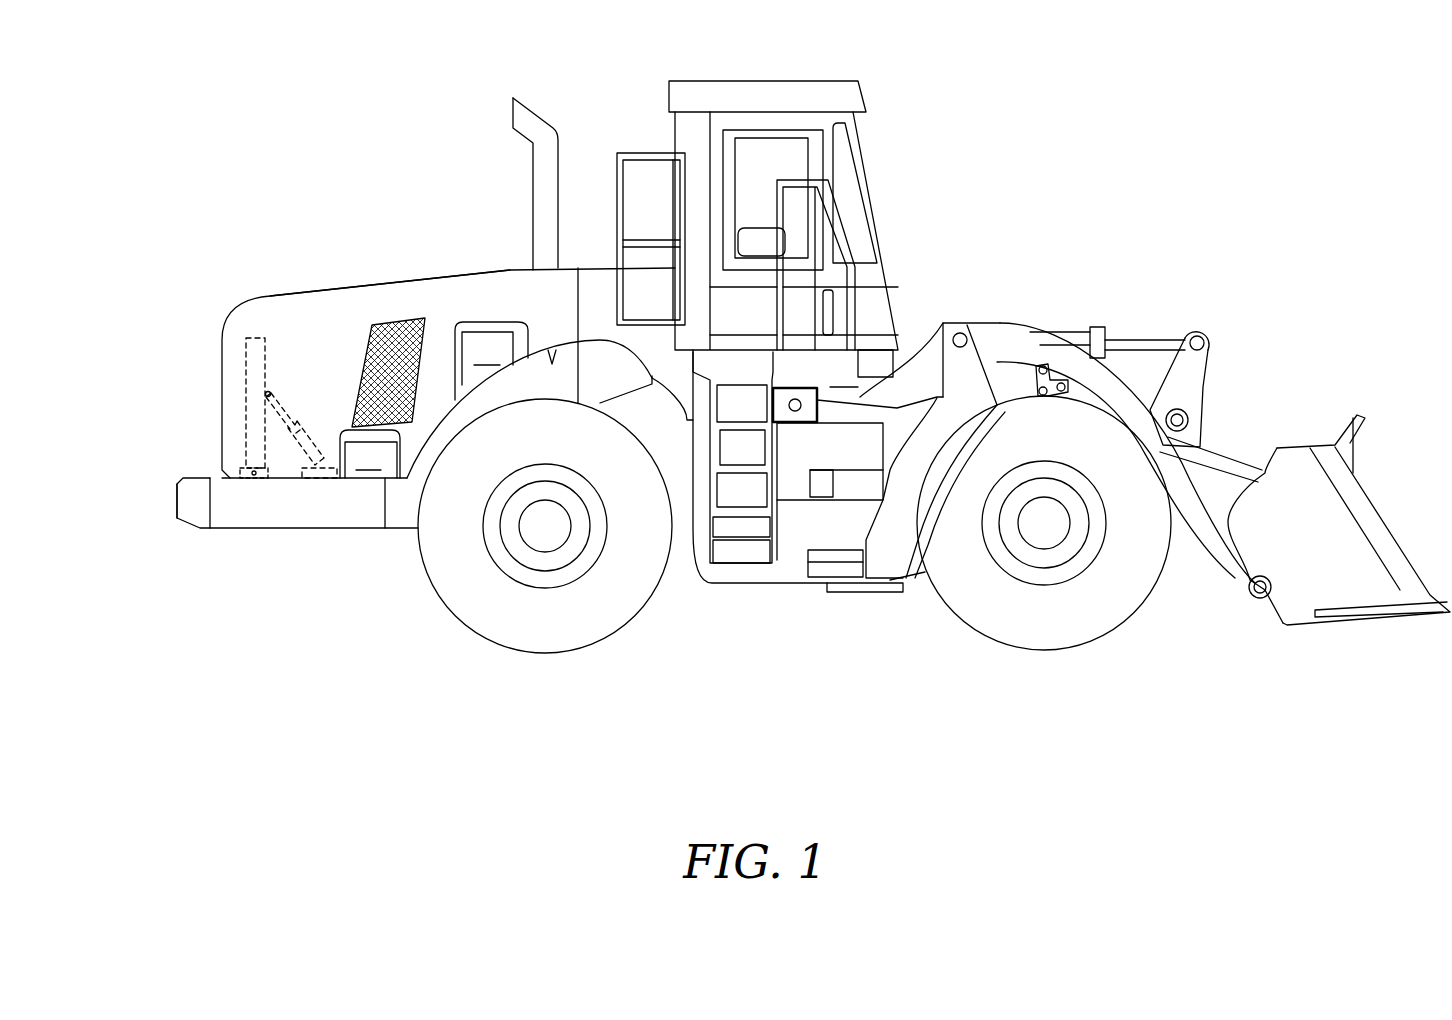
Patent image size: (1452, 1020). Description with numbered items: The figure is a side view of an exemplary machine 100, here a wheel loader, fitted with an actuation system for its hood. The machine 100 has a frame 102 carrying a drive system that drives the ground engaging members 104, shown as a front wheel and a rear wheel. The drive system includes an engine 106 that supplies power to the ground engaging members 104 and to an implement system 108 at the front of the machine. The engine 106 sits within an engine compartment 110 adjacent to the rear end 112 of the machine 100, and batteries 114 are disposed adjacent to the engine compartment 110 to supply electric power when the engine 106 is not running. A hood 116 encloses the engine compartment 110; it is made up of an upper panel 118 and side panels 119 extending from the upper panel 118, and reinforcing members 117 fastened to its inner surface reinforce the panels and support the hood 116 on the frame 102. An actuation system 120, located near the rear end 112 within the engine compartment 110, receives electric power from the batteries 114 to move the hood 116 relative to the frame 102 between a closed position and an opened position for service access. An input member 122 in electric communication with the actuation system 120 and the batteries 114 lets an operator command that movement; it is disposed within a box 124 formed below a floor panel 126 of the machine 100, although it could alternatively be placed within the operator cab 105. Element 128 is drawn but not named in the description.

The machine 100 is at (1222, 122).
The frame 102 is at (333, 528).
The ground engaging members 104 is at (545, 653).
The operator cab 105 is at (763, 81).
The engine 106 is at (491, 361).
The implement system 108 is at (1225, 328).
The engine compartment 110 is at (178, 698).
The rear end 112 is at (172, 548).
The batteries 114 is at (370, 454).
The hood 116 is at (352, 288).
The reinforcing members 117 is at (265, 345).
The upper panel 118 is at (440, 278).
The side panels 119 is at (552, 362).
The actuation system 120 is at (318, 415).
The input member 122 is at (800, 398).
The box 124 is at (830, 403).
The floor panel 126 is at (893, 362).
The hood actuator 128 is at (290, 412).